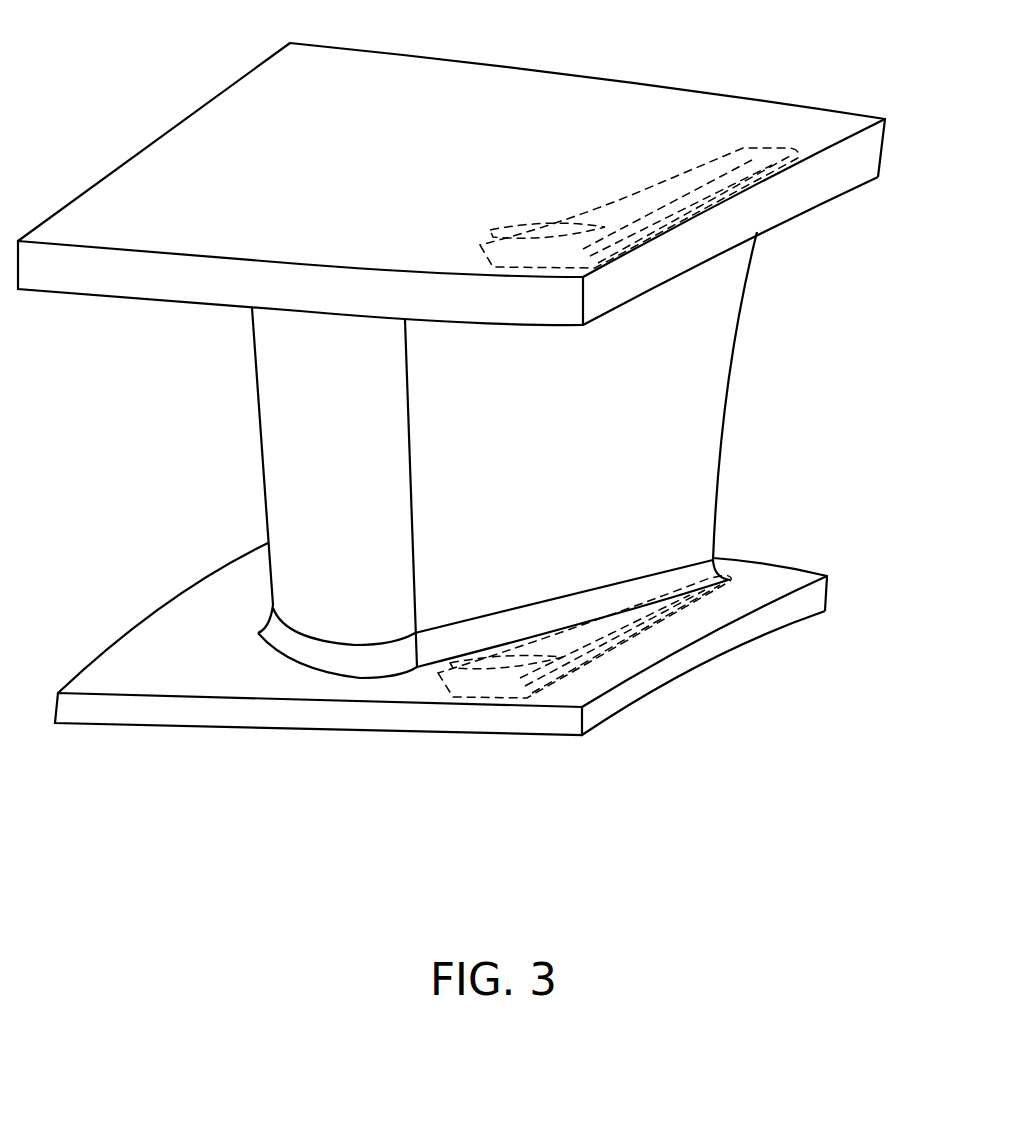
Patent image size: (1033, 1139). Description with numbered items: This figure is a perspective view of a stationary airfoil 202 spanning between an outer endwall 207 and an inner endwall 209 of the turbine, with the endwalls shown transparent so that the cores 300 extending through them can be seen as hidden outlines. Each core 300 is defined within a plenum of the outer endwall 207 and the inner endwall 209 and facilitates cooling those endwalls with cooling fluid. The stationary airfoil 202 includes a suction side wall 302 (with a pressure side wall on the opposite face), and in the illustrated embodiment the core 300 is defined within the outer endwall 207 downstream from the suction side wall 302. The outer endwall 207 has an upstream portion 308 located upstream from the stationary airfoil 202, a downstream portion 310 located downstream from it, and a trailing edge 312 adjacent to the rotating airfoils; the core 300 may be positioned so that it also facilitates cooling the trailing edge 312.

The stationary airfoil 202 is at (494, 455).
The outer endwall 207 is at (822, 135).
The inner endwall 209 is at (480, 640).
The core 300 is at (672, 222).
The suction side wall 302 is at (362, 437).
The upstream portion 308 is at (233, 595).
The downstream portion 310 is at (800, 578).
The trailing edge 312 is at (635, 692).